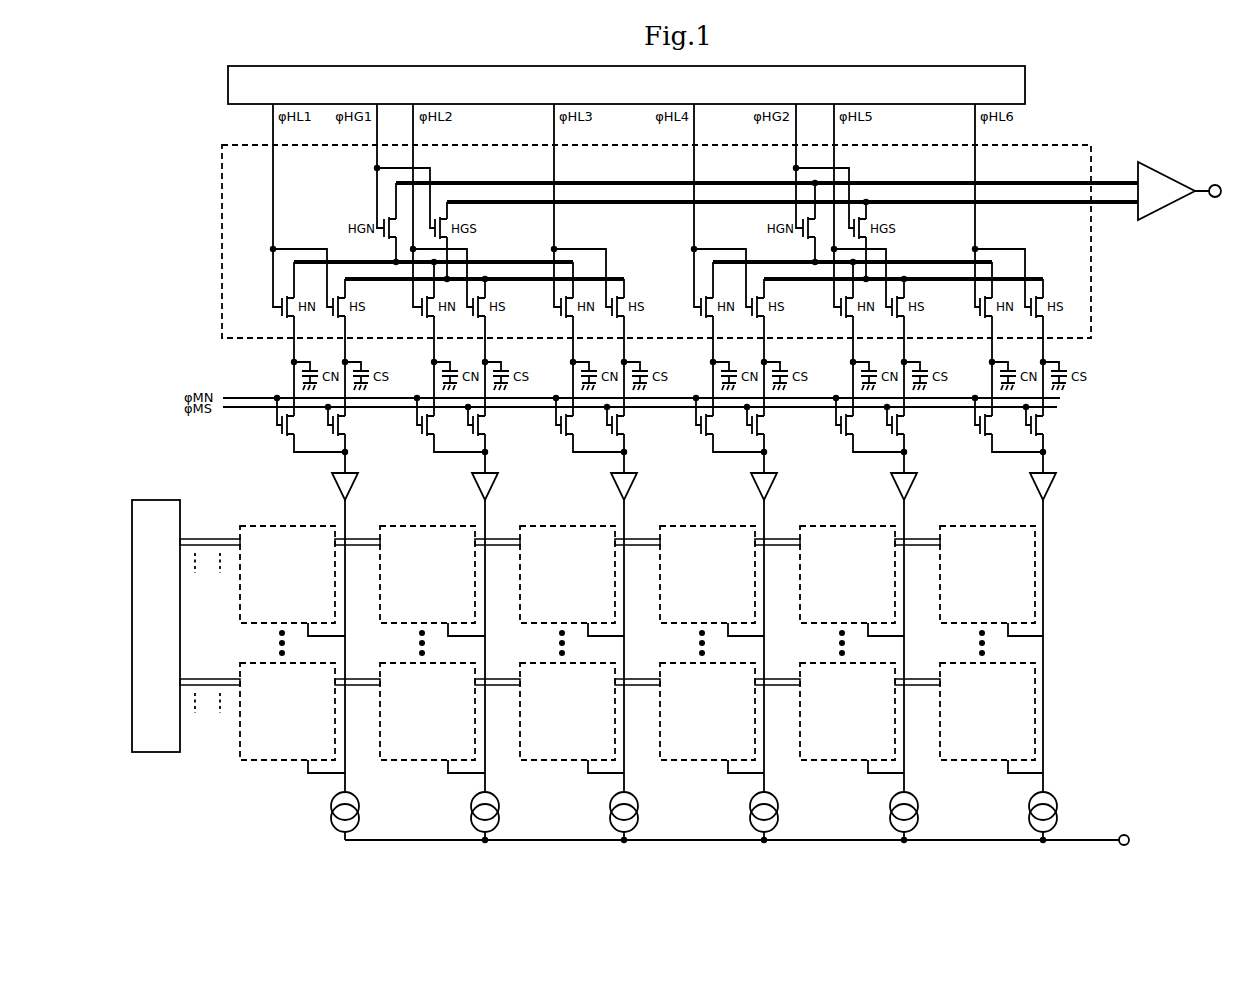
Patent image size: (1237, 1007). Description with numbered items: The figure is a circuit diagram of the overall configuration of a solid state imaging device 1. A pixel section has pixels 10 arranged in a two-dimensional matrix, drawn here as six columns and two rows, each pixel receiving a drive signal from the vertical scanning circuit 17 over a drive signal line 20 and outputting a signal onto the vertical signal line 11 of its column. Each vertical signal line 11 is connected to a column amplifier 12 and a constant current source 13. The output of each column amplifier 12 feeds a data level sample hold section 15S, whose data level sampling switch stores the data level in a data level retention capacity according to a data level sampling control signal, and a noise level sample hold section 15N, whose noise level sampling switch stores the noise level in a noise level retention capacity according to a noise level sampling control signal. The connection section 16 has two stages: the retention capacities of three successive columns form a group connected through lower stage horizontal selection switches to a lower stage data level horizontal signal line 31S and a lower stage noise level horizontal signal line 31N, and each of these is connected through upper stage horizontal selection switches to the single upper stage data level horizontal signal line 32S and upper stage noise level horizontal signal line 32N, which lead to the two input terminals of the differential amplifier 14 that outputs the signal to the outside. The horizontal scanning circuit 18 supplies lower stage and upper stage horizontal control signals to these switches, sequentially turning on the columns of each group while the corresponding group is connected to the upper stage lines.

The solid state imaging device 1 is at (1137, 533).
The pixel 10 is at (1036, 728).
The vertical signal line 11 is at (1088, 575).
The column amplifier 12 is at (1075, 494).
The constant current source 13 is at (1082, 804).
The differential amplifier 14 is at (1162, 208).
The noise level sample hold section 15N is at (976, 445).
The data level sample hold section 15S is at (1056, 444).
The connection section 16 is at (1100, 267).
The vertical scanning circuit 17 is at (156, 754).
The horizontal scanning circuit 18 is at (1025, 80).
The drive signal line 20 is at (178, 583).
The lower stage noise level horizontal signal line 31N is at (915, 262).
The lower stage data level horizontal signal line 31S is at (951, 279).
The upper stage noise level horizontal signal line 32N is at (602, 183).
The upper stage data level horizontal signal line 32S is at (647, 204).